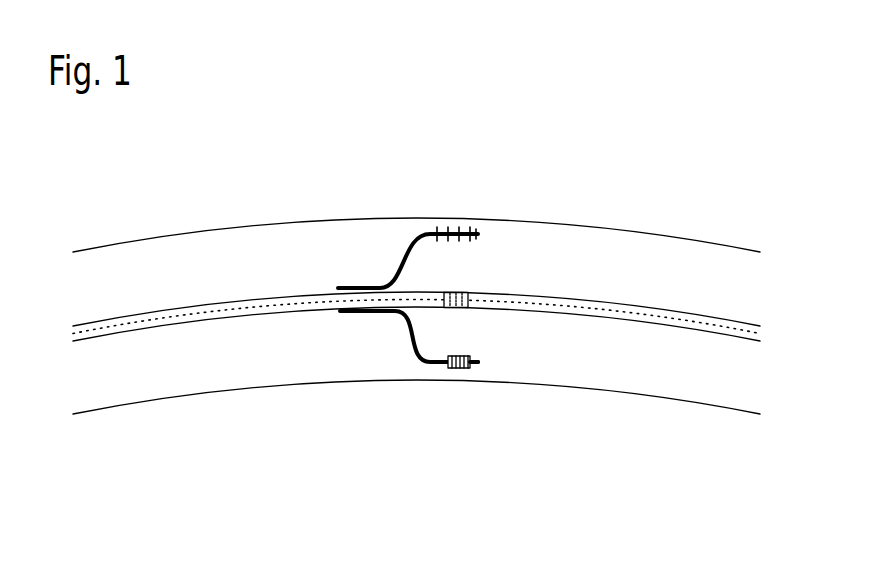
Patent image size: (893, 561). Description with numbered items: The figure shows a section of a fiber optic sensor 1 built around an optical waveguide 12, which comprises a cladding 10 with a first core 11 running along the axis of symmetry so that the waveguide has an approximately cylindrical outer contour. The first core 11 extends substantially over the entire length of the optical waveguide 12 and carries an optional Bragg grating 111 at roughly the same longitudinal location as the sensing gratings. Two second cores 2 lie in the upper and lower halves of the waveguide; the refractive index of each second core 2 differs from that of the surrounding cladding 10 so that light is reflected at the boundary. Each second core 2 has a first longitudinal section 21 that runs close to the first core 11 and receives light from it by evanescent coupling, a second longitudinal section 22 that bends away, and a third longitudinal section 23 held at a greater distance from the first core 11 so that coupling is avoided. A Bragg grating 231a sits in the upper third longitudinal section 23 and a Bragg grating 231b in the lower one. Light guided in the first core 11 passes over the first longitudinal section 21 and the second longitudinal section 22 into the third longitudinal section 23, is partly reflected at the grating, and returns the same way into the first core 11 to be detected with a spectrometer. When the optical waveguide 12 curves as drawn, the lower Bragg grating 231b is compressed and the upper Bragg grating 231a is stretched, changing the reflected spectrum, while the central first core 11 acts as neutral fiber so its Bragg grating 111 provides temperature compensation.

The fiber optic sensor 1 is at (117, 444).
The cladding 10 is at (640, 383).
The first core 11 is at (627, 305).
The Bragg grating 111 is at (469, 291).
The optical waveguide 12 is at (190, 232).
The second core 2 is at (372, 250).
The first longitudinal section 21 is at (364, 314).
The second longitudinal section 22 is at (406, 262).
The third longitudinal section 23 is at (478, 366).
The Bragg grating 231a is at (457, 231).
The Bragg grating 231b is at (457, 365).